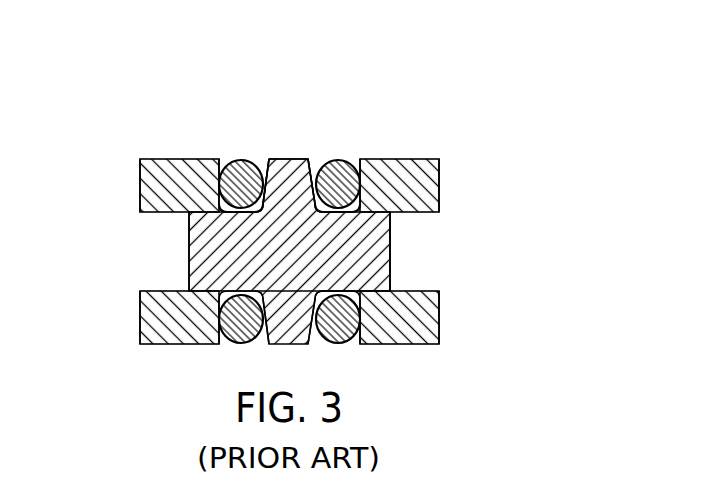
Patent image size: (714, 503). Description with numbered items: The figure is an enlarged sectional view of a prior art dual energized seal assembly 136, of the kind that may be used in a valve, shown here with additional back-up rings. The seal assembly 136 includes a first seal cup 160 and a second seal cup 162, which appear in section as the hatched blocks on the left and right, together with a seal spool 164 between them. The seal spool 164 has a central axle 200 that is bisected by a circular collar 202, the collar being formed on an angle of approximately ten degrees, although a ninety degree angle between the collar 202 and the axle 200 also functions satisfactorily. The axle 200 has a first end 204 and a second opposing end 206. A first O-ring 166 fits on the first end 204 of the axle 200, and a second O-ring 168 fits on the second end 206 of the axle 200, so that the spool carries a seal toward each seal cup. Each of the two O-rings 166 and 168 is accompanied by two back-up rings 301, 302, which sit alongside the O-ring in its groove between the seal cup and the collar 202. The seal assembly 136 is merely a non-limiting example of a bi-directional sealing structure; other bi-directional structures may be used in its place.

The seal assembly 136 is at (530, 232).
The first seal cup 160 is at (185, 159).
The second seal cup 162 is at (390, 159).
The seal spool 164 is at (280, 120).
The first O-ring 166 is at (249, 159).
The second O-ring 168 is at (333, 159).
The central axle 200 is at (390, 285).
The circular collar 202 is at (303, 159).
The first end 204 is at (188, 237).
The second opposing end 206 is at (390, 250).
The back-up ring 301 is at (225, 159).
The back-up ring 302 is at (219, 205).